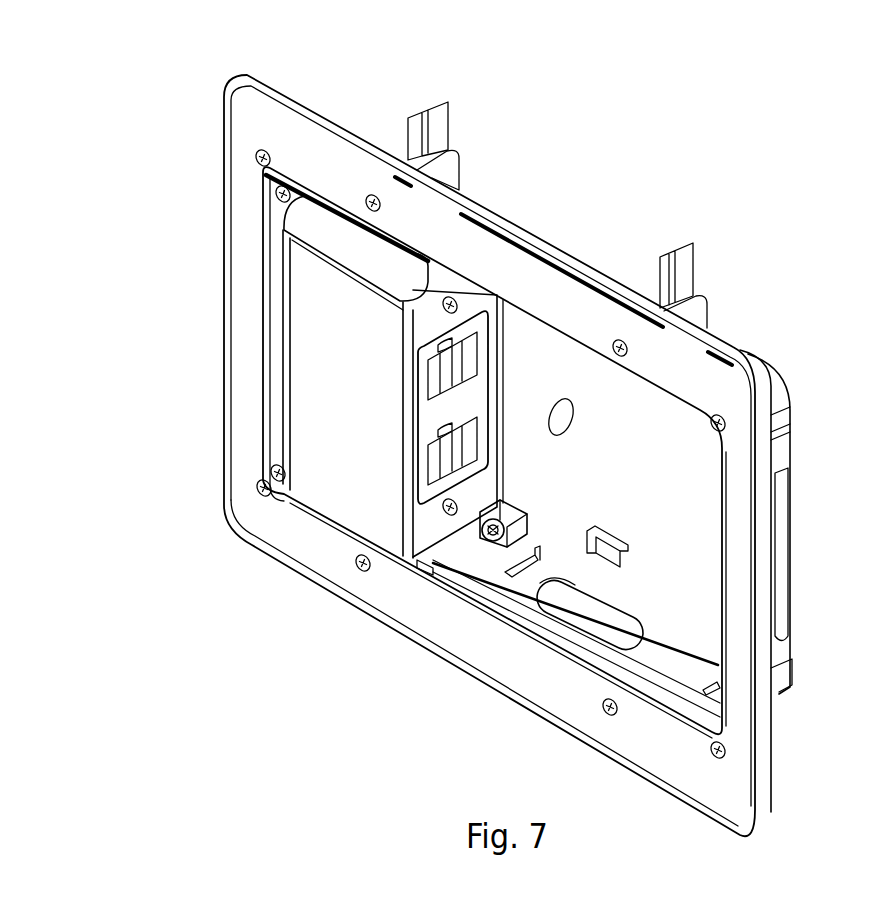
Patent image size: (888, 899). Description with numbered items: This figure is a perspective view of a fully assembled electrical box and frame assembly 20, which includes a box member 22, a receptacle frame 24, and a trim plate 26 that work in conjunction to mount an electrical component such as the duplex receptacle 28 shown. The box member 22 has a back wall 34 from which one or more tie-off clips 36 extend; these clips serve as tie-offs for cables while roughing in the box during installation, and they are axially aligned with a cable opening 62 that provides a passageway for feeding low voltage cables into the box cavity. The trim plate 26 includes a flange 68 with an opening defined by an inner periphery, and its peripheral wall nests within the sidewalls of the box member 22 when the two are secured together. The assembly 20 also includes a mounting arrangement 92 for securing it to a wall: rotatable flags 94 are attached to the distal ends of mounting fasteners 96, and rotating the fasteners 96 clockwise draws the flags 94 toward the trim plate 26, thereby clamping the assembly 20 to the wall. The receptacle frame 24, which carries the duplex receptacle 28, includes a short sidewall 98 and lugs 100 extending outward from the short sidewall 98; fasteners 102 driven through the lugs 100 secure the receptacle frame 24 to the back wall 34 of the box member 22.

The electrical box and frame assembly 20 is at (146, 112).
The box member 22 is at (792, 448).
The receptacle frame 24 is at (322, 383).
The trim plate 26 is at (760, 829).
The duplex receptacle 28 is at (464, 406).
The back wall 34 is at (657, 450).
The tie-off clip 36 is at (618, 545).
The cable opening 62 is at (583, 610).
The flange 68 is at (507, 274).
The mounting arrangement 92 is at (752, 281).
The rotatable flag 94 is at (448, 121).
The mounting fastener 96 is at (612, 352).
The short sidewall 98 is at (482, 483).
The lug 100 is at (513, 518).
The fastener 102 is at (484, 545).